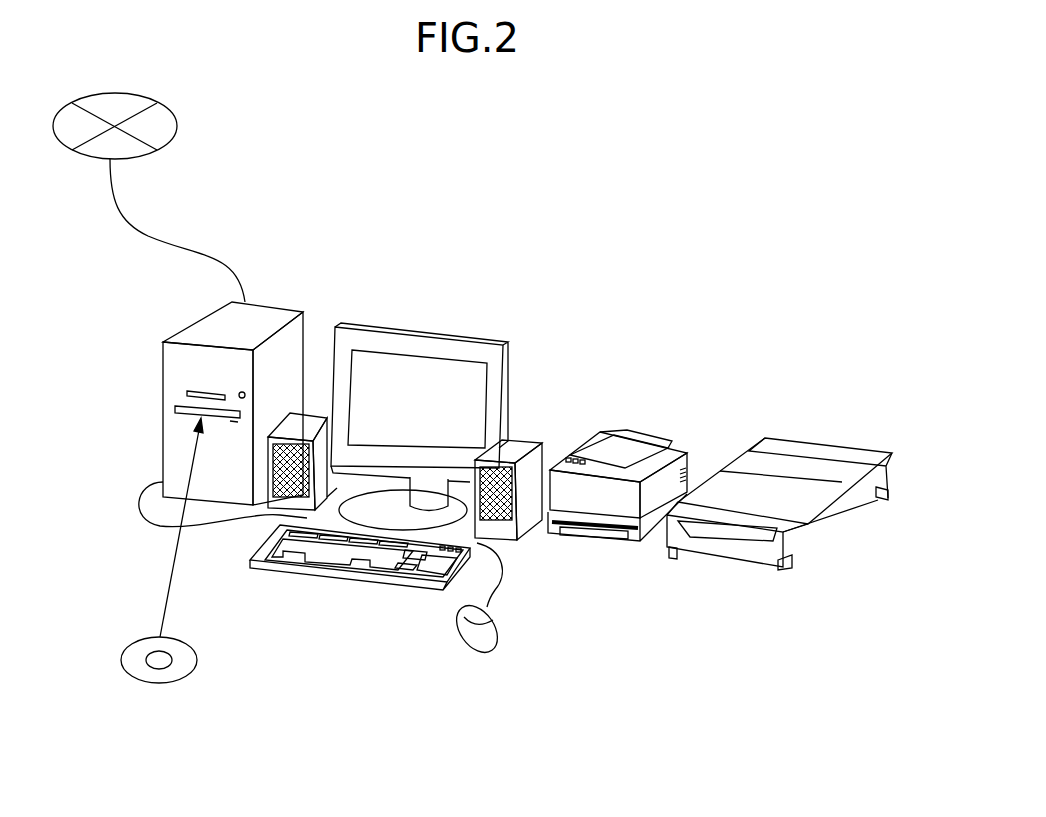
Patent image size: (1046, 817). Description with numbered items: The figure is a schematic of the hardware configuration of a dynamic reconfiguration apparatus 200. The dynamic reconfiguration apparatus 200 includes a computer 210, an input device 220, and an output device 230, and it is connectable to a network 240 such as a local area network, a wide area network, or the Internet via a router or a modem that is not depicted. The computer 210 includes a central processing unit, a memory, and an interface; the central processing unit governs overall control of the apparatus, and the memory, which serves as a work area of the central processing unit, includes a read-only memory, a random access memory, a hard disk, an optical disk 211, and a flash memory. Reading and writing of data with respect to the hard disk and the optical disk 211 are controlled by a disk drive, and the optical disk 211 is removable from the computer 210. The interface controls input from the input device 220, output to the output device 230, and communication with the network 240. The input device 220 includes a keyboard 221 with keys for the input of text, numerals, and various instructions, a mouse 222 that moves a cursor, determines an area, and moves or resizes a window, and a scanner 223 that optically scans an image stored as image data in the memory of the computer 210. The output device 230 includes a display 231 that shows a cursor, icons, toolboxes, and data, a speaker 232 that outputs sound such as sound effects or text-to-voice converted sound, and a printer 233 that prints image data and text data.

The dynamic reconfiguration apparatus 200 is at (720, 125).
The computer 210 is at (265, 305).
The optical disk 211 is at (157, 683).
The input device 220 is at (618, 722).
The keyboard 221 is at (398, 590).
The mouse 222 is at (490, 644).
The scanner 223 is at (697, 560).
The output device 230 is at (690, 287).
The display 231 is at (465, 335).
The speaker 232 is at (537, 440).
The printer 233 is at (647, 430).
The network 240 is at (115, 93).